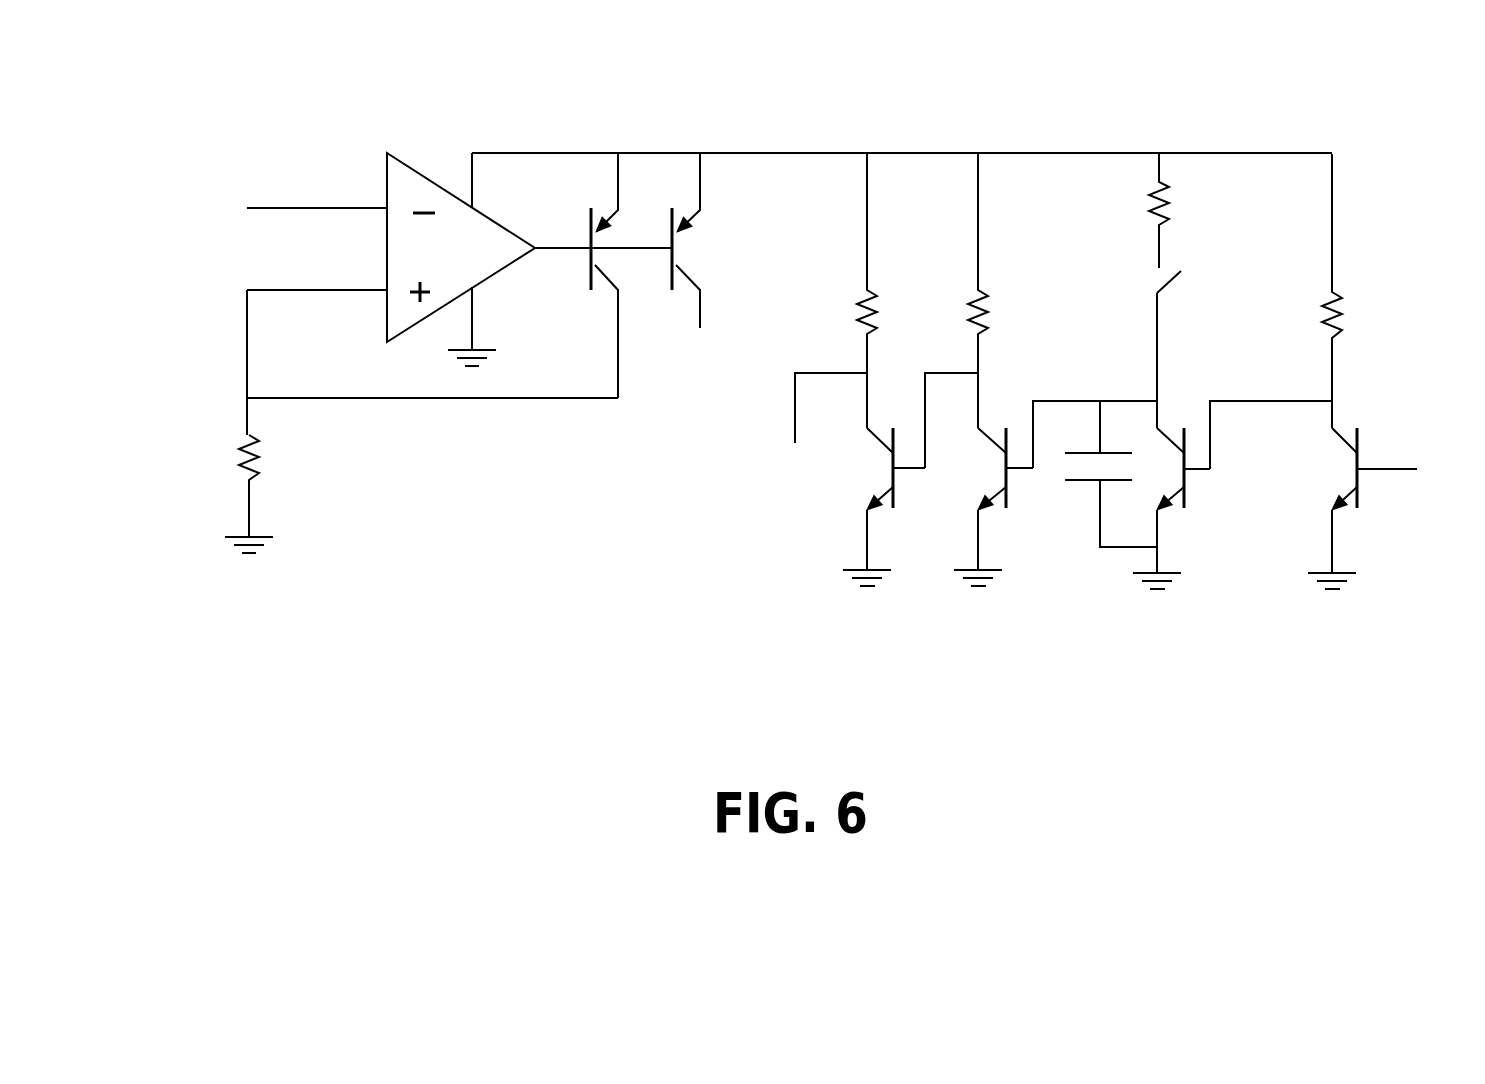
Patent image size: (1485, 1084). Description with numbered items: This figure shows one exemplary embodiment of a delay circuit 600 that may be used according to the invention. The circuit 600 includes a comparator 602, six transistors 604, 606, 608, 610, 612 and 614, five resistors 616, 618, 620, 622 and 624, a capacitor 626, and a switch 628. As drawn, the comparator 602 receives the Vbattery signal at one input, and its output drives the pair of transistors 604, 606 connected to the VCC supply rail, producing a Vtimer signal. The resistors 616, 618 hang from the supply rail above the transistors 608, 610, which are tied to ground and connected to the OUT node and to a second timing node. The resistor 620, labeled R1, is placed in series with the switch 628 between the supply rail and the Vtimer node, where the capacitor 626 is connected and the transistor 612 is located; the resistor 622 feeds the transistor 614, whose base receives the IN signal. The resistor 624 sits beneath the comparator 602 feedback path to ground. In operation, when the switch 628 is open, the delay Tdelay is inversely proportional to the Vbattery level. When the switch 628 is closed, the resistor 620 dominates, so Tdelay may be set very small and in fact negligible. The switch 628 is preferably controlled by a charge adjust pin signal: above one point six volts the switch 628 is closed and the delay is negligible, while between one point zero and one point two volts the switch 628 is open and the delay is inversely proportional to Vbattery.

The circuit 600 is at (828, 62).
The comparator 602 is at (397, 340).
The transistor 604 is at (613, 285).
The transistor 606 is at (690, 275).
The transistor 608 is at (888, 487).
The transistor 610 is at (1000, 487).
The transistor 612 is at (1180, 507).
The transistor 614 is at (1345, 450).
The resistor 616 is at (863, 335).
The resistor 618 is at (983, 323).
The resistor 620 is at (1155, 227).
The resistor 622 is at (1327, 337).
The resistor 624 is at (258, 447).
The capacitor 626 is at (1090, 482).
The switch 628 is at (1213, 337).